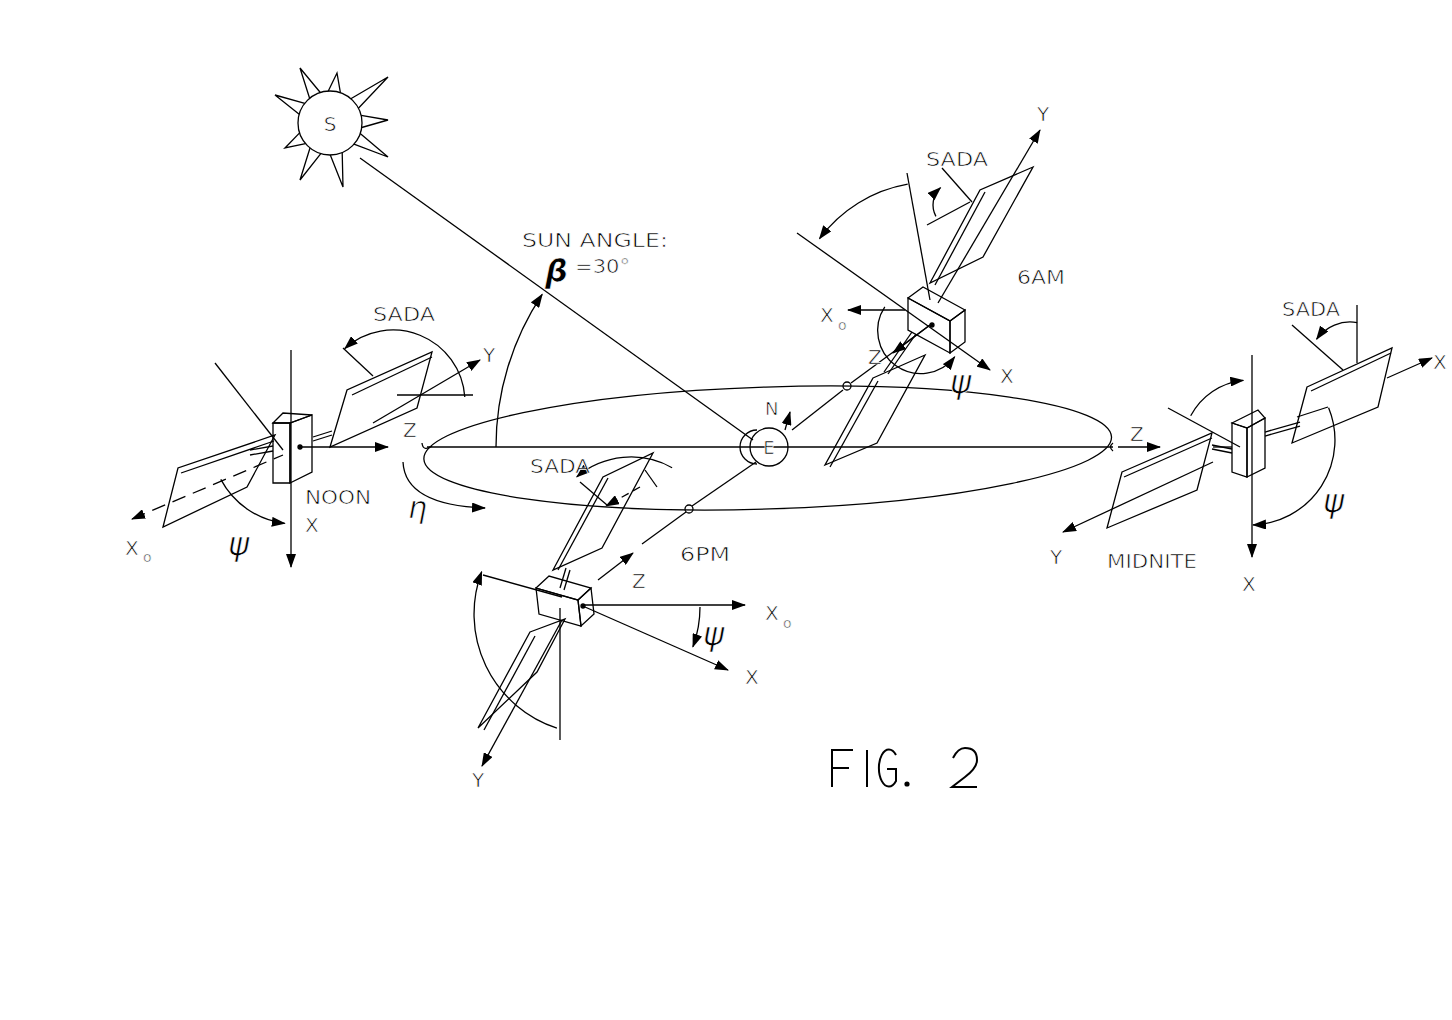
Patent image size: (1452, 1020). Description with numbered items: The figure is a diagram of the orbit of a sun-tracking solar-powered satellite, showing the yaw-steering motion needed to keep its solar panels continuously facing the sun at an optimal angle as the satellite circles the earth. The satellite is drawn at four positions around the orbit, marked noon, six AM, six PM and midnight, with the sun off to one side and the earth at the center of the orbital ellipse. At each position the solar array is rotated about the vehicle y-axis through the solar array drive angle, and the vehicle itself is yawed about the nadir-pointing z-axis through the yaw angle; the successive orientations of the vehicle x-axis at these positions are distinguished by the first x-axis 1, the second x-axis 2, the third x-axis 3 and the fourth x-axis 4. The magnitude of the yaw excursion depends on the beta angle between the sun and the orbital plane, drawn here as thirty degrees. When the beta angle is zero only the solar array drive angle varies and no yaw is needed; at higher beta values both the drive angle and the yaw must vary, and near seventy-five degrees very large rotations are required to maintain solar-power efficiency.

The X1 axis 1 is at (1043, 352).
The X2 axis 2 is at (586, 339).
The X3 axis 3 is at (431, 562).
The X4 axis 4 is at (843, 555).